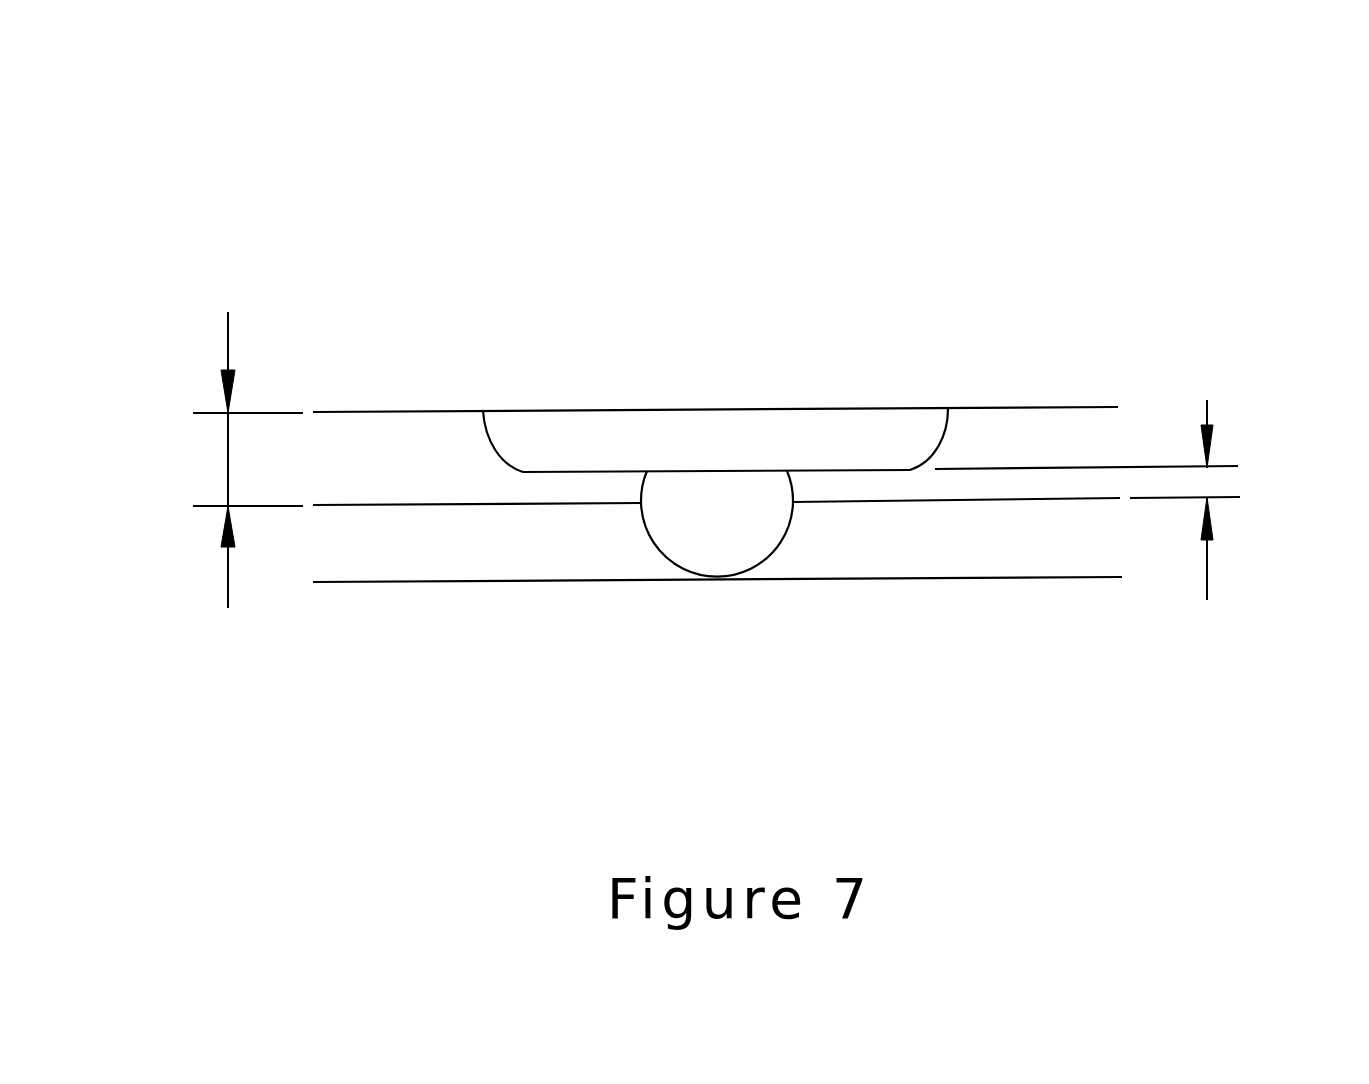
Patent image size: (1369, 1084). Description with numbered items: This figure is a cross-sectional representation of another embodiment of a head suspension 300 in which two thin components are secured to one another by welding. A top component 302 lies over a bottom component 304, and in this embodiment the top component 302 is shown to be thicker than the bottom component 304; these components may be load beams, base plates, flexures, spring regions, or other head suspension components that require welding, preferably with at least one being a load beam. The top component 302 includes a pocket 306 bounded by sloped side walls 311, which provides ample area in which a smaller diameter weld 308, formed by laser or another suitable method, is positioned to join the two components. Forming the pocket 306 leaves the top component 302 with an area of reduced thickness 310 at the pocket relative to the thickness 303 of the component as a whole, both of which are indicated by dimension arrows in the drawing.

The head suspension 300 is at (847, 177).
The top component 302 is at (1048, 427).
The thickness 303 is at (230, 458).
The bottom component 304 is at (1058, 558).
The pocket 306 is at (563, 417).
The weld 308 is at (777, 552).
The reduced thickness 310 is at (1207, 400).
The sloped side walls 311 is at (932, 443).